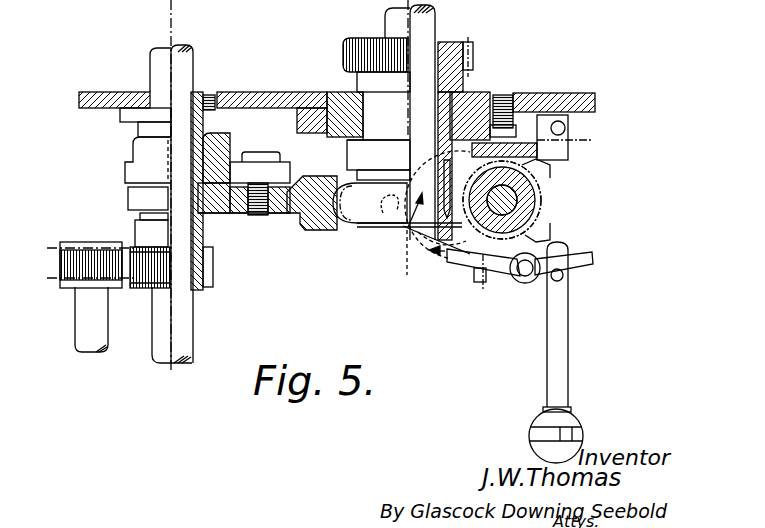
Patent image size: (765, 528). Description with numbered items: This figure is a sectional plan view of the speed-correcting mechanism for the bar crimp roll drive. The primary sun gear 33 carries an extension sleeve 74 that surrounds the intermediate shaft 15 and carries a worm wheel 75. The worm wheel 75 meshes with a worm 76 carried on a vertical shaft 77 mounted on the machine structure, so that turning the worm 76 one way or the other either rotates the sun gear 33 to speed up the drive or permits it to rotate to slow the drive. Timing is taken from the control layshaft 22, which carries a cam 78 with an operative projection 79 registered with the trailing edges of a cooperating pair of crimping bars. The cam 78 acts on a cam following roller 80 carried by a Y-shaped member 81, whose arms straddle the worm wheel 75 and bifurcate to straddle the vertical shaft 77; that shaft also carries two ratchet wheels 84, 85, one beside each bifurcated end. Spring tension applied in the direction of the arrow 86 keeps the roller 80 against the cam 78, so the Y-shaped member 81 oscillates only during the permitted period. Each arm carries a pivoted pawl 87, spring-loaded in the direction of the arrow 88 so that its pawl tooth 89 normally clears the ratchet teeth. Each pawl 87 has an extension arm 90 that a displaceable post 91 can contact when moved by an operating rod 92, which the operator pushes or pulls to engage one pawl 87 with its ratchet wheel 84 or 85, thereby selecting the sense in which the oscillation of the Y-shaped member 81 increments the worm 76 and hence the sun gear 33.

The intermediate shaft 15 is at (398, 23).
The control layshaft 22 is at (184, 69).
The primary sun gear 33 is at (345, 47).
The extension sleeve 74 is at (462, 92).
The worm wheel 75 is at (370, 212).
The worm 76 is at (540, 212).
The vertical shaft 77 is at (515, 195).
The cam 78 is at (142, 170).
The operative projection 79 is at (218, 162).
The cam following roller 80 is at (282, 172).
The Y-shaped member 81 is at (307, 224).
The ratchet wheel 84 is at (550, 240).
The ratchet wheel 85 is at (550, 240).
The arrow 86 is at (140, 197).
The pivoted pawl 87 is at (458, 247).
The arrow 88 is at (406, 222).
The pawl tooth 89 is at (507, 262).
The extension arm 90 is at (573, 142).
The displaceable post 91 is at (566, 126).
The operating rod 92 is at (557, 333).